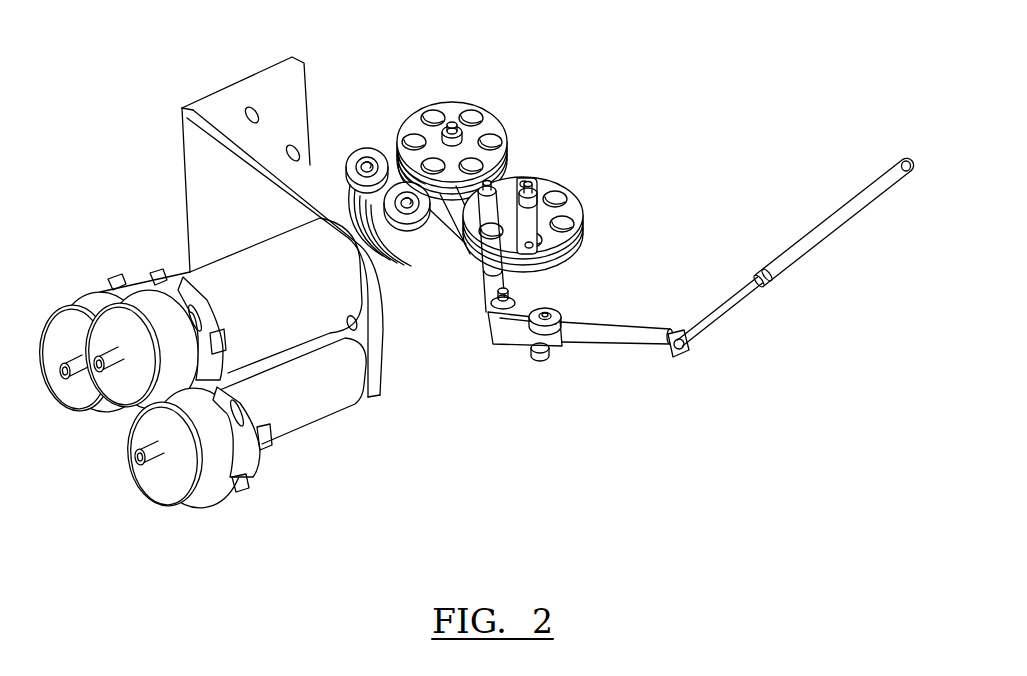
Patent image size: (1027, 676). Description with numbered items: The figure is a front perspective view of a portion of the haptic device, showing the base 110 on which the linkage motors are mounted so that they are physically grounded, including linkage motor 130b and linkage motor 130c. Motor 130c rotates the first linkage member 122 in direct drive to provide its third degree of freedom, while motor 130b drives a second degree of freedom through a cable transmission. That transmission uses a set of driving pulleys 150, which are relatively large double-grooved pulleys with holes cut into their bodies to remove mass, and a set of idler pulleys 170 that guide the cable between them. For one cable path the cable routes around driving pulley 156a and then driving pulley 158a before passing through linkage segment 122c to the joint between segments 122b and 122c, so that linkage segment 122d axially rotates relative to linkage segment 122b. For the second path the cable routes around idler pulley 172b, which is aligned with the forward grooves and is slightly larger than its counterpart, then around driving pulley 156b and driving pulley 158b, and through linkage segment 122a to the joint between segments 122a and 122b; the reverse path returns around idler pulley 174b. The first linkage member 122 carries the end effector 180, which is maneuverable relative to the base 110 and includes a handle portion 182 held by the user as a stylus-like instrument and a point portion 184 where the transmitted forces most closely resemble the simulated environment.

The base 110 is at (212, 200).
The first linkage member 122 is at (551, 320).
The linkage segment 122a is at (493, 292).
The linkage segment 122b is at (513, 337).
The linkage segment 122c is at (534, 293).
The linkage segment 122d is at (627, 340).
The linkage motor 130b is at (272, 454).
The linkage motor 130c is at (175, 279).
The set of driving pulleys 150 is at (498, 114).
The second driving pulley 156a is at (458, 191).
The second driving pulley 156b is at (504, 122).
The fourth driving pulley 158a is at (578, 260).
The fourth driving pulley 158b is at (586, 203).
The set of idler pulleys 170 is at (393, 138).
The idler pulley 172b is at (355, 144).
The idler pulley 174b is at (410, 188).
The end effector 180 is at (791, 246).
The handle portion 182 is at (862, 202).
The point portion 184 is at (707, 331).